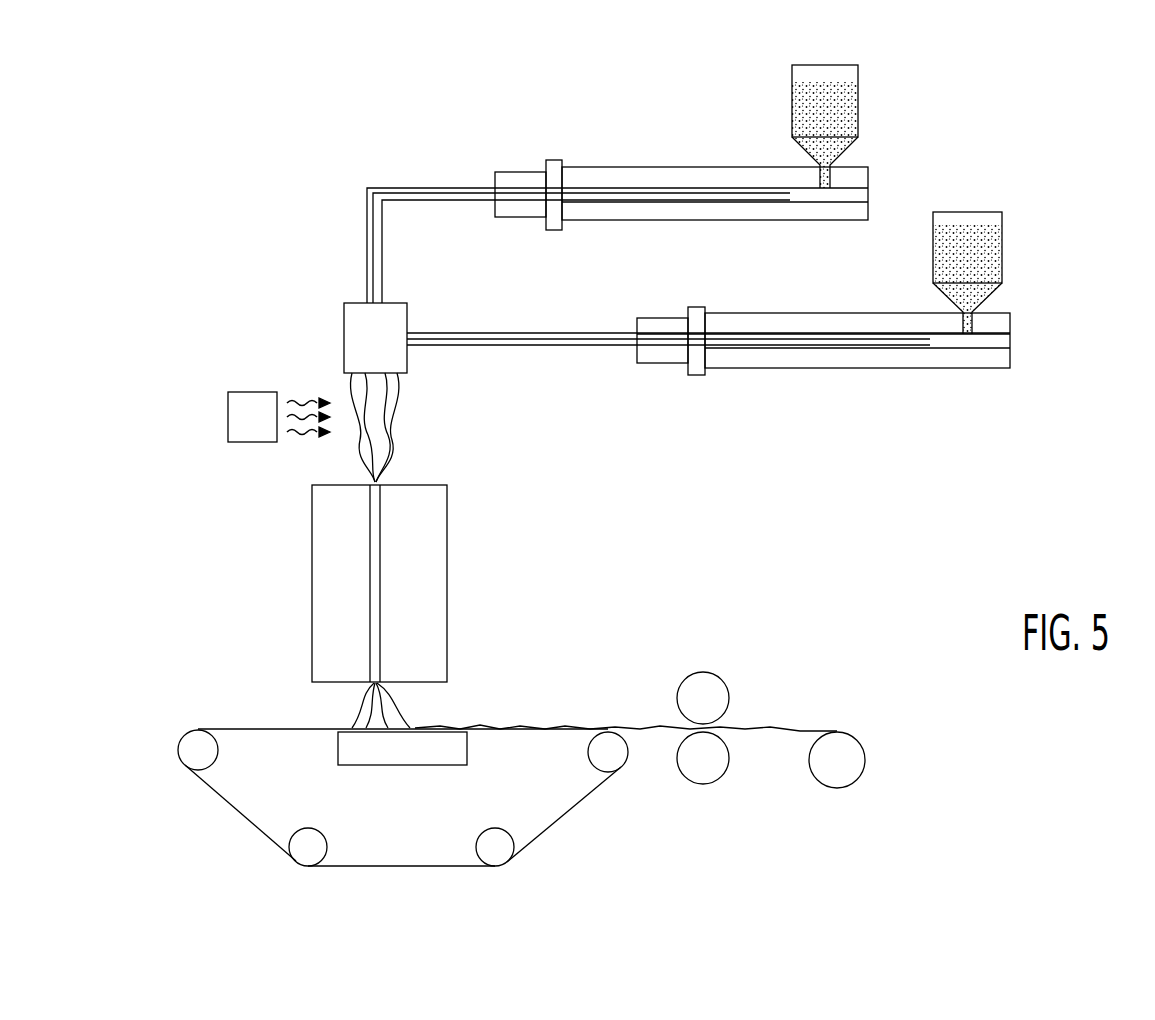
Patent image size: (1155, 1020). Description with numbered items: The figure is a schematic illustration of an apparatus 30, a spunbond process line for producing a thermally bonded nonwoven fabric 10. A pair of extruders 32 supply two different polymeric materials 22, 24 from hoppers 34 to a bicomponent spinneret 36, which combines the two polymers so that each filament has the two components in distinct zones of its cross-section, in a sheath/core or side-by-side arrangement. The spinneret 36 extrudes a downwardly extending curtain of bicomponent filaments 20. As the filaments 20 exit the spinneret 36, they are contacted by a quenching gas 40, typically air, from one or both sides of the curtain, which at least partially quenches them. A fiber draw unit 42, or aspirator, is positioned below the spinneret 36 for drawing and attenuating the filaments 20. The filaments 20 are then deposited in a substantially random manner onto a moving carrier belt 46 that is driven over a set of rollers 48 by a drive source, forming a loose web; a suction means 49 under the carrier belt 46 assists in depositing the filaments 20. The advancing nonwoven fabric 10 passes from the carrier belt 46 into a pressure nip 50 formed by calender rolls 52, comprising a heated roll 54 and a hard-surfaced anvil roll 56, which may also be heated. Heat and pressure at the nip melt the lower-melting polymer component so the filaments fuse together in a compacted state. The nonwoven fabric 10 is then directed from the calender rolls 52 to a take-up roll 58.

The nonwoven fabric 10 is at (497, 728).
The bicomponent filaments 20 is at (392, 410).
The first polymeric material 22 is at (805, 107).
The second polymeric material 24 is at (982, 246).
The apparatus 30 is at (135, 328).
The extruders 32 is at (594, 167).
The hoppers 34 is at (900, 177).
The bicomponent spinneret 36 is at (368, 335).
The quenching gas 40 is at (248, 400).
The fiber draw unit 42 is at (436, 485).
The carrier belt 46 is at (228, 812).
The rollers 48 is at (218, 752).
The suction means 49 is at (402, 766).
The pressure nip 50 is at (682, 727).
The calender rolls 52 is at (737, 708).
The heated roll 54 is at (727, 690).
The anvil roll 56 is at (705, 785).
The take-up roll 58 is at (840, 789).